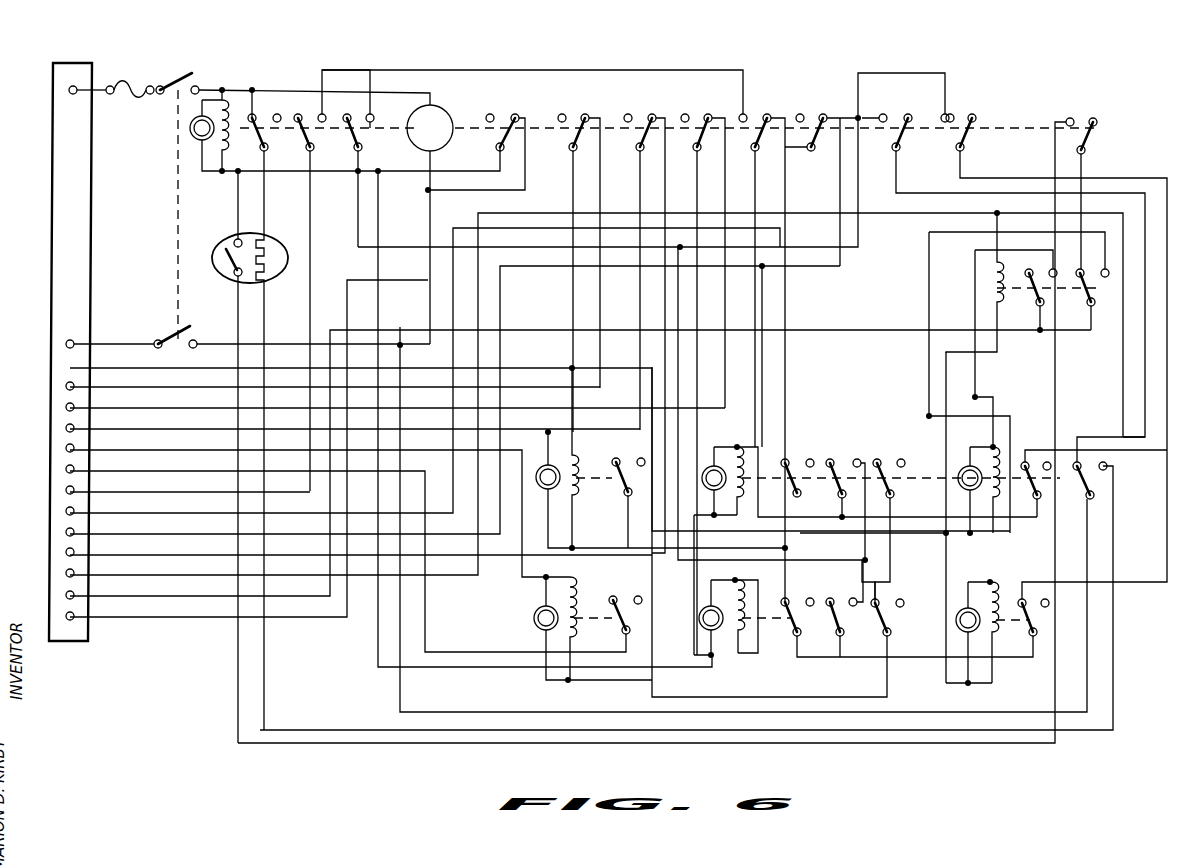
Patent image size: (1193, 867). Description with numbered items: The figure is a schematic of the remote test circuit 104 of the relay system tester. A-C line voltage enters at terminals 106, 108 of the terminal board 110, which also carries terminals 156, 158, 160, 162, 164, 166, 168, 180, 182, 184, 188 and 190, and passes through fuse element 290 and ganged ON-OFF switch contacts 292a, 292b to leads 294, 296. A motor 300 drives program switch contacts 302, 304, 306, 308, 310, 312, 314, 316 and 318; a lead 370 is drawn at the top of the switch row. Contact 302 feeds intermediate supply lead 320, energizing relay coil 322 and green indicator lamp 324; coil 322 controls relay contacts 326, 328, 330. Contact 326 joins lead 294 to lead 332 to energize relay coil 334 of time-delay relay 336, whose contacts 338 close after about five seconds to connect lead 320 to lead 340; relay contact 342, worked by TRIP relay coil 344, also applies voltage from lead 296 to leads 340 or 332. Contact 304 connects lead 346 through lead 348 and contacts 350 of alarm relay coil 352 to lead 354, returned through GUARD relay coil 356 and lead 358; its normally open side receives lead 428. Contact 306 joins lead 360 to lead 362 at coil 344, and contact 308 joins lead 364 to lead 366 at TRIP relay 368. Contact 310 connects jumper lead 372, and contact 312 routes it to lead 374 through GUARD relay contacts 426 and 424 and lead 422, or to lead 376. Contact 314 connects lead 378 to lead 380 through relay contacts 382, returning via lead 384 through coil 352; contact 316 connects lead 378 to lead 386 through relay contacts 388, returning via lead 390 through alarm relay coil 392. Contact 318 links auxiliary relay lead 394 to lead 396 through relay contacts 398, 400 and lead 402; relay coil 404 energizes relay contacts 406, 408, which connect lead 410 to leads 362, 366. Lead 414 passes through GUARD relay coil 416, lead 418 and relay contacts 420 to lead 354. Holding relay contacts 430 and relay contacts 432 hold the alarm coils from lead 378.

The test circuit 104 is at (604, 50).
The terminal 106 is at (64, 90).
The terminal 108 is at (66, 344).
The terminal board 110 is at (73, 65).
The terminal 156 is at (66, 386).
The terminal 158 is at (66, 407).
The terminal 160 is at (66, 428).
The terminal 162 is at (66, 448).
The terminal 164 is at (66, 469).
The terminal 166 is at (66, 490).
The terminal 168 is at (66, 573).
The terminal 180 is at (66, 595).
The terminal 182 is at (66, 511).
The terminal 184 is at (66, 532).
The terminal 188 is at (66, 552).
The terminal 190 is at (66, 616).
The fuse element 290 is at (128, 85).
The ON-OFF switch contact 292a is at (182, 71).
The ON-OFF switch contact 292b is at (164, 338).
The lead 294 is at (304, 90).
The lead 296 is at (430, 194).
The motor 300 is at (444, 110).
The program switch contact 302 is at (506, 113).
The program switch contact 304 is at (569, 113).
The program switch contact 306 is at (636, 116).
The program switch contact 308 is at (694, 116).
The program switch contact 310 is at (754, 116).
The program switch contact 312 is at (809, 116).
The program switch contact 314 is at (892, 116).
The program switch contact 316 is at (969, 116).
The program switch contact 318 is at (1079, 119).
The intermediate supply lead 320 is at (400, 154).
The relay coil 322 is at (228, 98).
The green indicator lamp 324 is at (188, 142).
The relay contact 326 is at (280, 147).
The relay contact 328 is at (328, 147).
The relay contact 330 is at (358, 108).
The lead 332 is at (262, 663).
The relay coil 334 is at (268, 242).
The time-delay relay 336 is at (288, 259).
The relay contacts 338 is at (212, 257).
The lead 340 is at (236, 680).
The relay contact 342 is at (1108, 486).
The TRIP relay coil 344 is at (1006, 526).
The lead 346 is at (580, 166).
The lead 348 is at (610, 292).
The relay contacts 350 is at (792, 458).
The alarm relay coil 352 is at (726, 494).
The lead 354 is at (785, 548).
The GUARD relay coil 356 is at (590, 500).
The lead 358 is at (150, 433).
The lead 360 is at (148, 392).
The lead 362 is at (665, 192).
The lead 364 is at (715, 158).
The lead 366 is at (727, 185).
The TRIP relay 368 is at (995, 676).
The conductor 370 is at (480, 72).
The jumper lead 372 is at (152, 496).
The lead 374 is at (158, 538).
The lead 376 is at (152, 517).
The lead 378 is at (898, 76).
The lead 380 is at (896, 168).
The relay contacts 382 is at (1038, 522).
The lead 384 is at (918, 520).
The lead 386 is at (971, 182).
The relay contacts 388 is at (1044, 646).
The lead 390 is at (892, 662).
The alarm relay coil 392 is at (736, 646).
The auxiliary relay lead 394 is at (516, 212).
The lead 396 is at (1082, 213).
The relay contacts 398 is at (890, 484).
The relay contacts 400 is at (890, 624).
The lead 402 is at (164, 558).
The relay coil 404 is at (1020, 299).
The relay contacts 406 is at (1084, 300).
The relay contacts 408 is at (1104, 310).
The lead 410 is at (848, 330).
The lead 414 is at (150, 454).
The GUARD relay coil 416 is at (570, 628).
The lead 418 is at (582, 682).
The relay contacts 420 is at (790, 590).
The lead 422 is at (158, 475).
The GUARD relay contacts 424 is at (621, 596).
The GUARD relay contacts 426 is at (632, 459).
The lead 428 is at (379, 290).
The holding relay contacts 430 is at (844, 469).
The relay contacts 432 is at (834, 632).